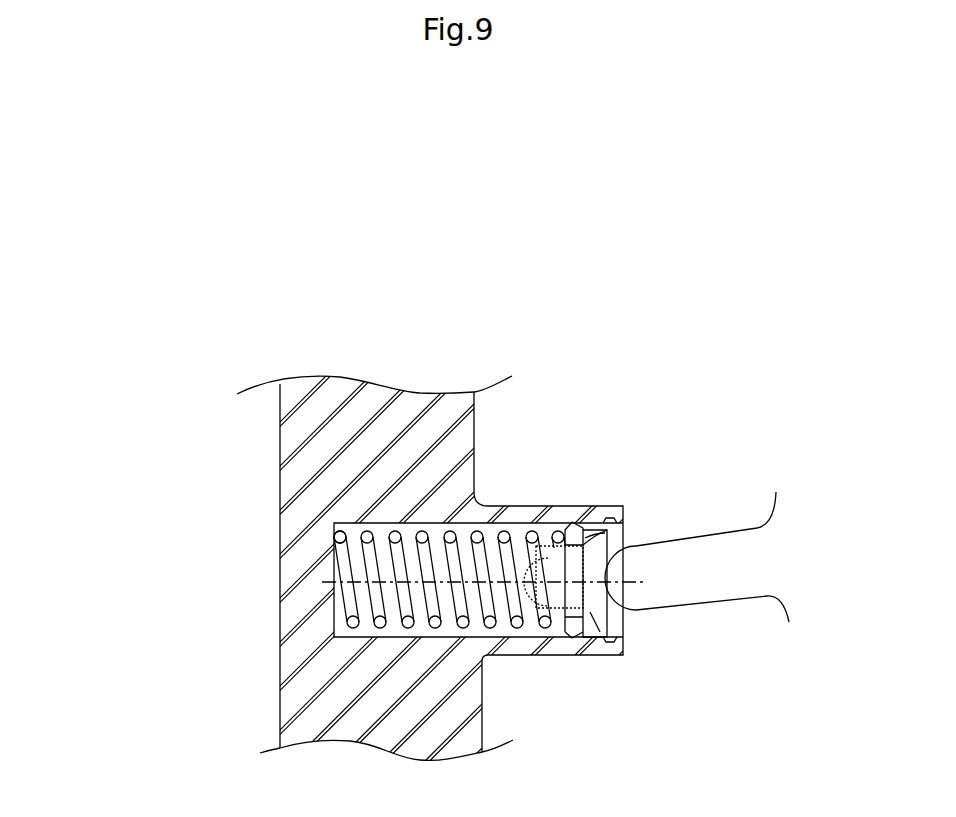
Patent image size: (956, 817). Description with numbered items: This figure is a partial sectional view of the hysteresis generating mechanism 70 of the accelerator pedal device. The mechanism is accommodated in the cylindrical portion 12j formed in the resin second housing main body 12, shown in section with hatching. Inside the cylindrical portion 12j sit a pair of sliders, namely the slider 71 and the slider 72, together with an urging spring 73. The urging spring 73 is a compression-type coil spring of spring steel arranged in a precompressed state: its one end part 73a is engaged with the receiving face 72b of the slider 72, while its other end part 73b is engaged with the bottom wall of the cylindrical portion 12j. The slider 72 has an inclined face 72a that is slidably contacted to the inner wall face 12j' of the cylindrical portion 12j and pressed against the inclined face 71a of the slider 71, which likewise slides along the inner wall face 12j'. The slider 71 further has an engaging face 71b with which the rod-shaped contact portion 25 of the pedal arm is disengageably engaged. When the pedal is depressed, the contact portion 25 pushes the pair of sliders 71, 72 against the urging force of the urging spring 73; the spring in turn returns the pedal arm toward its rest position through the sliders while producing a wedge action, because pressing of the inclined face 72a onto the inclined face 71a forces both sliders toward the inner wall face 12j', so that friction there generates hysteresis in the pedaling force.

The second housing main body 12 is at (266, 580).
The cylindrical portion 12j is at (647, 464).
The inner wall face 12j' is at (579, 534).
The hysteresis generating mechanism 70 is at (550, 343).
The slider 71 is at (611, 617).
The inclined face 71a is at (613, 523).
The engaging face 71b is at (607, 536).
The slider 72 is at (566, 522).
The inclined face 72a is at (579, 525).
The receiving face 72b is at (563, 622).
The urging spring 73 is at (464, 520).
The one end part 73a is at (557, 529).
The other end part 73b is at (336, 533).
The contact portion 25 is at (746, 550).